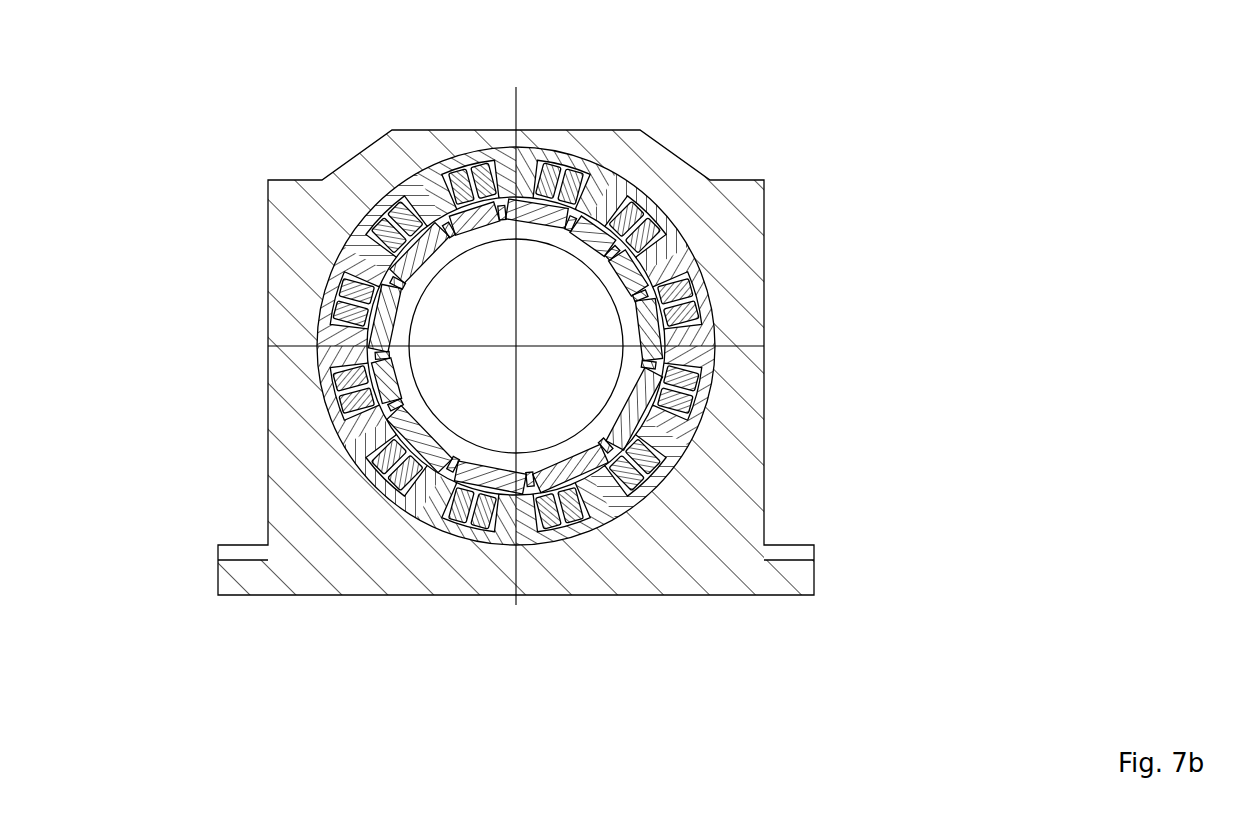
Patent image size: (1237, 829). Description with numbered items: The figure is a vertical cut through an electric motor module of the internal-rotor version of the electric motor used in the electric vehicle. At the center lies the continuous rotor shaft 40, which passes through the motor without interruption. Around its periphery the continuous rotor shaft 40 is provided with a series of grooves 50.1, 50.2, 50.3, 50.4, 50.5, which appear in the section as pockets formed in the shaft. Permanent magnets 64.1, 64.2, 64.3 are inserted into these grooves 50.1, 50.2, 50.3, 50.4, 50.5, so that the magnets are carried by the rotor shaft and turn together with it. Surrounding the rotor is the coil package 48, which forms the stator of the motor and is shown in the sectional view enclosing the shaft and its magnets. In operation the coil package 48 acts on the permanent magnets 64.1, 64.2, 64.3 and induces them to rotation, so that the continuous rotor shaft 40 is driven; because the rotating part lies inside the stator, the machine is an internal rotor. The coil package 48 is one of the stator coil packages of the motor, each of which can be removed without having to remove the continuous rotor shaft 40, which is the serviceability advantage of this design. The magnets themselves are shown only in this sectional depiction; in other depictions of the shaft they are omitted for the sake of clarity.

The continuous rotor shaft 40 is at (460, 448).
The coil package 48 is at (673, 258).
The groove 50.1 is at (548, 221).
The groove 50.2 is at (435, 237).
The groove 50.3 is at (417, 257).
The groove 50.4 is at (390, 368).
The groove 50.5 is at (400, 410).
The permanent magnet 64.1 is at (530, 205).
The permanent magnet 64.2 is at (450, 223).
The permanent magnet 64.3 is at (397, 282).